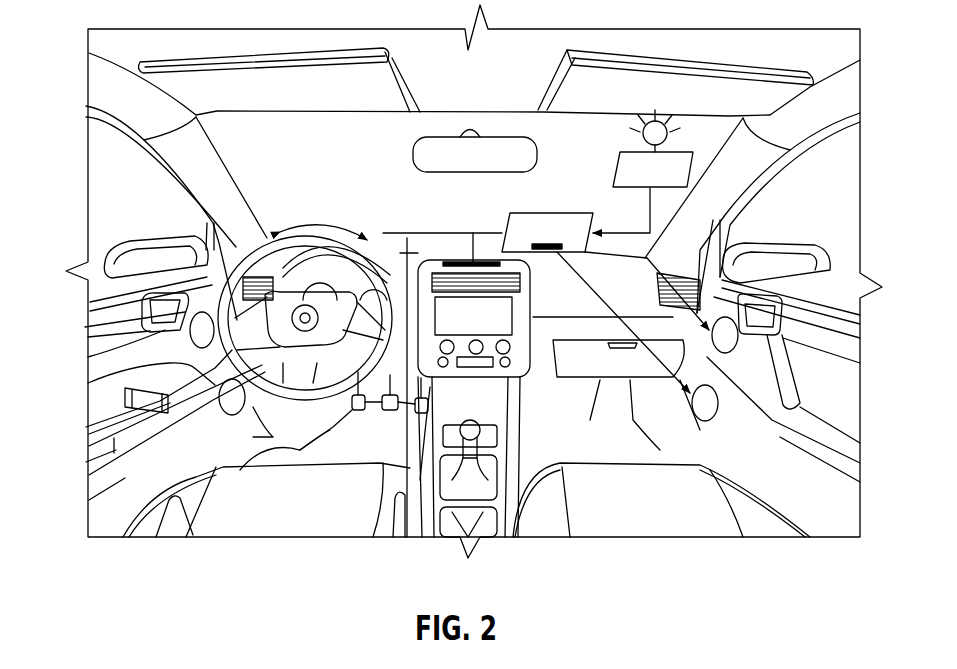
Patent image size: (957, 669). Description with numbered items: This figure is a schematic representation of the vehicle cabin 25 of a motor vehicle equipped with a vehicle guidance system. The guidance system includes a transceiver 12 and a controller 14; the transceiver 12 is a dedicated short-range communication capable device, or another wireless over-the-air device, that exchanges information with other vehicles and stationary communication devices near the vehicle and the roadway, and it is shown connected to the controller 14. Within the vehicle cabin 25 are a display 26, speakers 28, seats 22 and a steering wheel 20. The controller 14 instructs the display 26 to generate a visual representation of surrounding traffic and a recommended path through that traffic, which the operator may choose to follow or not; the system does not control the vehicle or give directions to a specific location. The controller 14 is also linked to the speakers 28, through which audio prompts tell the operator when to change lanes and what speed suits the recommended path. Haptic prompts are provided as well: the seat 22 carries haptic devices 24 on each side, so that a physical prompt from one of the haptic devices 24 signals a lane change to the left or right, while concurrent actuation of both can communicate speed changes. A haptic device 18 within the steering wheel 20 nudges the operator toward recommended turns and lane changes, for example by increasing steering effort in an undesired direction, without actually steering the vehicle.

The transceiver 12 is at (622, 170).
The controller 14 is at (605, 290).
The haptic device 18 is at (362, 410).
The steering wheel 20 is at (325, 232).
The seat 22 is at (281, 497).
The haptic devices 24 is at (168, 522).
The vehicle cabin 25 is at (118, 189).
The display 26 is at (493, 308).
The speakers 28 is at (219, 398).